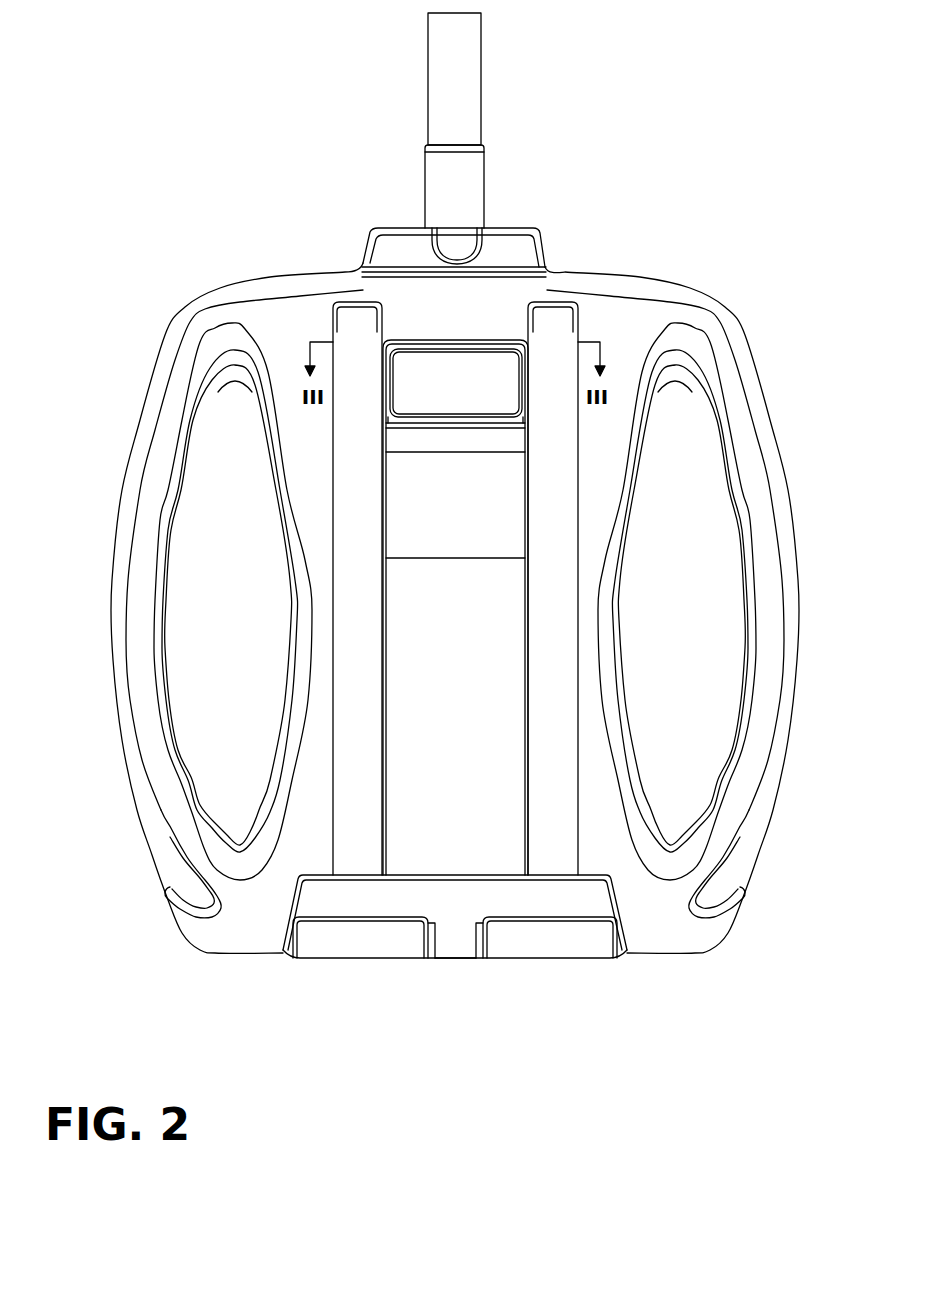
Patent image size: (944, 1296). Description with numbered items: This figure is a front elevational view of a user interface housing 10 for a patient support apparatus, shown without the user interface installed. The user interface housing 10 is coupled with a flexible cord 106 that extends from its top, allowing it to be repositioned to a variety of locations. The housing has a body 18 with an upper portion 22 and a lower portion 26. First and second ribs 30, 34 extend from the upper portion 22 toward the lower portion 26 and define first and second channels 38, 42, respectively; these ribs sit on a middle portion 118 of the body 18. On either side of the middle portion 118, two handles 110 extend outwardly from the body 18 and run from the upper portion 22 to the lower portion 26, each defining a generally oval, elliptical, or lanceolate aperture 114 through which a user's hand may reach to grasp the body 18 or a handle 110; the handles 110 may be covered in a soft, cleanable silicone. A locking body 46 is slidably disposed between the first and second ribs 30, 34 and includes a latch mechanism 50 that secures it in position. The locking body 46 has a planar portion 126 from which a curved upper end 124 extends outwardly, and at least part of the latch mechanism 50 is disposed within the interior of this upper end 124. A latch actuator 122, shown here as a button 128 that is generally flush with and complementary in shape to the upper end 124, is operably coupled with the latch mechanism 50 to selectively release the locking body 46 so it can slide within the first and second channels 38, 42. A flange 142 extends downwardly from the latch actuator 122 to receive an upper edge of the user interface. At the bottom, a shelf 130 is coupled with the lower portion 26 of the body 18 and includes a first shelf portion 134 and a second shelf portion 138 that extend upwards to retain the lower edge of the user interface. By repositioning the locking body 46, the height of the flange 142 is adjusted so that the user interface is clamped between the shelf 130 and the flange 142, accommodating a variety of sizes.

The user interface housing 10 is at (247, 128).
The body 18 is at (597, 312).
The upper portion 22 is at (278, 303).
The lower portion 26 is at (253, 935).
The first rib 30 is at (352, 744).
The second rib 34 is at (537, 820).
The first channel 38 is at (380, 787).
The second channel 42 is at (528, 797).
The locking body 46 is at (308, 258).
The latch mechanism 50 is at (506, 323).
The cord 106 is at (447, 90).
The handles 110 is at (143, 437).
The apertures 114 is at (234, 618).
The middle portion 118 is at (423, 816).
The latch actuator 122 is at (414, 390).
The upper end 124 is at (492, 342).
The planar portion 126 is at (477, 507).
The button 128 is at (460, 387).
The shelf 130 is at (496, 962).
The first shelf portion 134 is at (367, 937).
The second shelf portion 138 is at (548, 937).
The flange 142 is at (448, 437).